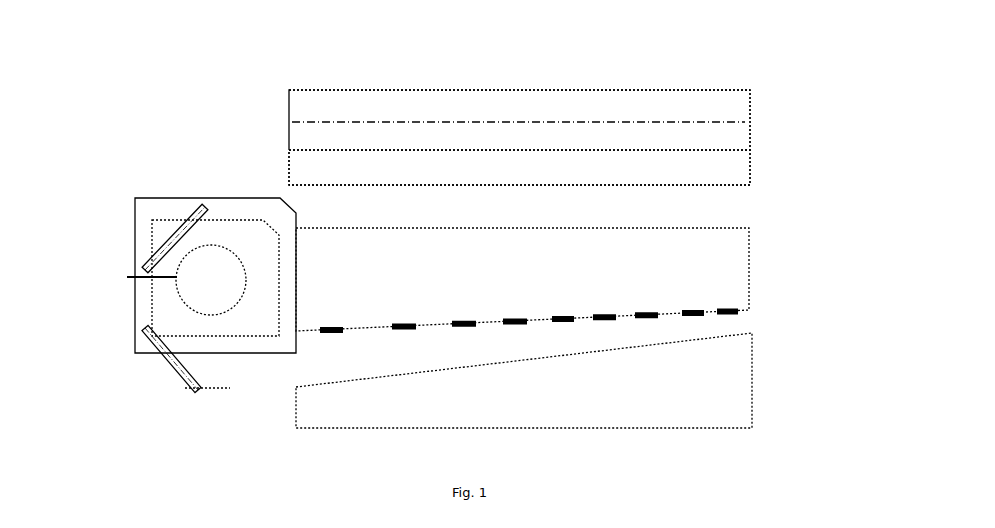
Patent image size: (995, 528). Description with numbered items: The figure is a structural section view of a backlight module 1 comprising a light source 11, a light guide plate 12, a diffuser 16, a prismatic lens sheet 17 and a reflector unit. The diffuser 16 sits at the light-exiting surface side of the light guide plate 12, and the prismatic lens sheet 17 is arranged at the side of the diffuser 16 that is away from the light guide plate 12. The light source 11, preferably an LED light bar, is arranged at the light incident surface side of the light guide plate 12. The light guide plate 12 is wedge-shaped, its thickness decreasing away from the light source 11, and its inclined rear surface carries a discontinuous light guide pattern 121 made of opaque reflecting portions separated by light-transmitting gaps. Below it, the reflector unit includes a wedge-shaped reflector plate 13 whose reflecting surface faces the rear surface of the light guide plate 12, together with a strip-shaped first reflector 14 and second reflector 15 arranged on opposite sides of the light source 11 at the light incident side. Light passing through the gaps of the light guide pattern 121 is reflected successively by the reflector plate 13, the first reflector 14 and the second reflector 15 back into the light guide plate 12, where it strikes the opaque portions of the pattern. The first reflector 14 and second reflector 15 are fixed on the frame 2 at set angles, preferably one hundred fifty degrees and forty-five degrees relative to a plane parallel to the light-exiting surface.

The display module 1 is at (695, 68).
The frame 2 is at (180, 203).
The light source 11 is at (212, 270).
The light guide plate 12 is at (732, 263).
The light guide pattern 121 is at (750, 300).
The reflector plate 13 is at (730, 373).
The first reflector 14 is at (178, 368).
The second reflector 15 is at (165, 247).
The diffuser 16 is at (732, 175).
The prismatic lens sheet 17 is at (732, 125).